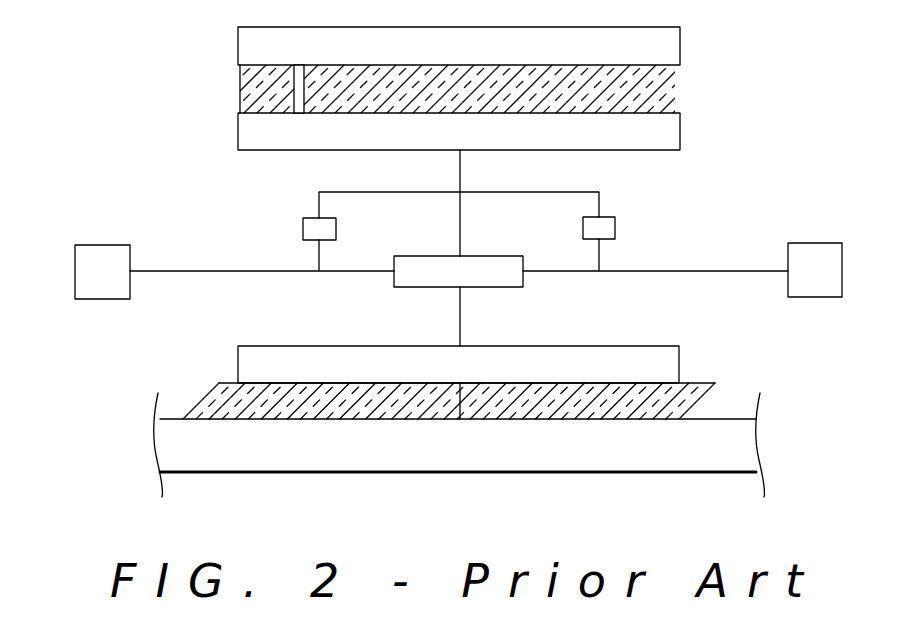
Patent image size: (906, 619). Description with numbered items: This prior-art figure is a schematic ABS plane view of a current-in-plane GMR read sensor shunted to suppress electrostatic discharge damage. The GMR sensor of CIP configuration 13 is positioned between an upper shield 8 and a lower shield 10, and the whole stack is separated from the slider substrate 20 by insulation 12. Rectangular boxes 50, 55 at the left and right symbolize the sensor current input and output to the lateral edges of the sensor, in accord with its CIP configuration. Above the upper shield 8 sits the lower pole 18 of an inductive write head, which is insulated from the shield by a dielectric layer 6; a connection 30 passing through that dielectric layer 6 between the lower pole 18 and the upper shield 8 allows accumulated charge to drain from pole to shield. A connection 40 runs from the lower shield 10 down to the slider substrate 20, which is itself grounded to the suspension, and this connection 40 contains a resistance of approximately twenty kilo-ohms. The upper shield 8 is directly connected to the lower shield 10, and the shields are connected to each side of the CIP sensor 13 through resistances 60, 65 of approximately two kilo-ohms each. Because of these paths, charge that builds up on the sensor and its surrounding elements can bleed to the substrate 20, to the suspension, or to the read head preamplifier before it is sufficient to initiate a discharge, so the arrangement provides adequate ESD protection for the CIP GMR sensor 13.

The lower pole 18 is at (668, 46).
The dielectric layer 6 is at (665, 80).
The upper shield 8 is at (668, 128).
The connection 30 is at (297, 88).
The resistance 65 is at (305, 230).
The resistance 60 is at (603, 230).
The rectangular box 55 is at (92, 270).
The rectangular box 50 is at (822, 270).
The GMR sensor of CIP configuration 13 is at (496, 277).
The lower shield 10 is at (665, 366).
The insulation 12 is at (285, 405).
The connection 40 is at (443, 418).
The slider substrate 20 is at (735, 446).